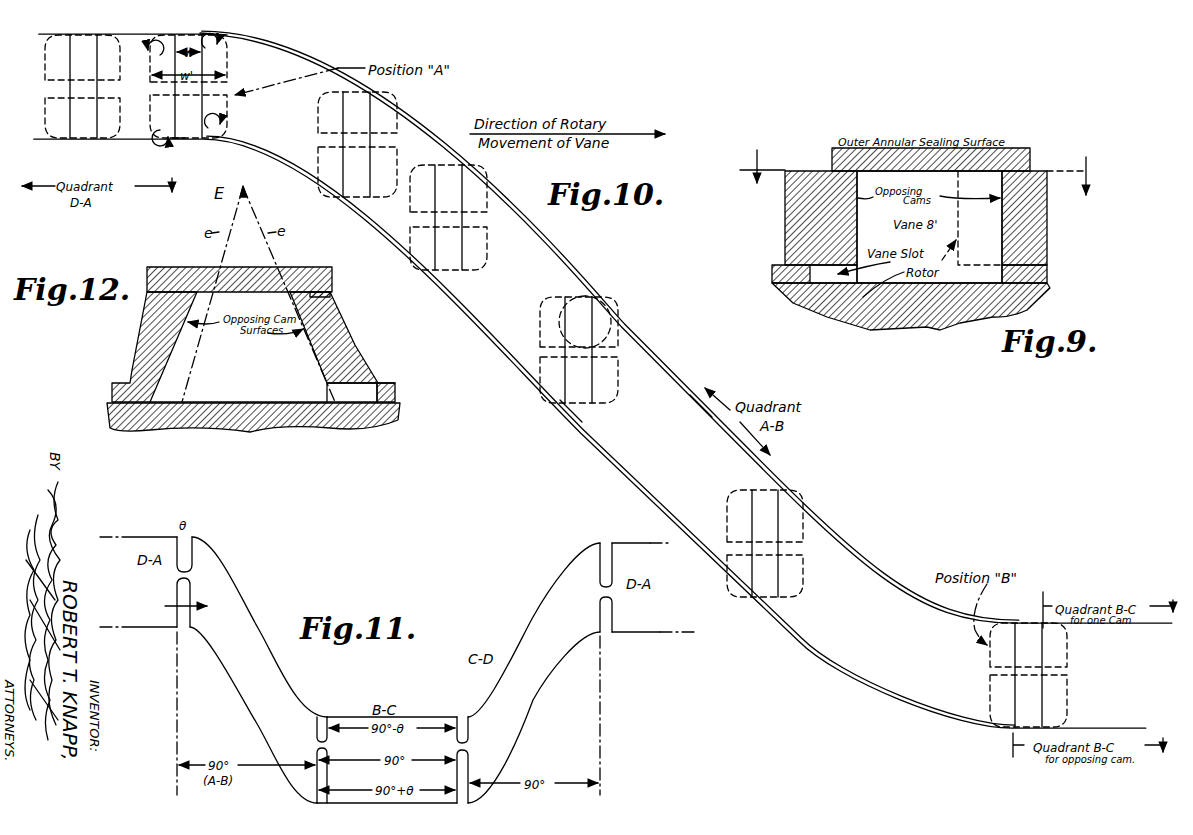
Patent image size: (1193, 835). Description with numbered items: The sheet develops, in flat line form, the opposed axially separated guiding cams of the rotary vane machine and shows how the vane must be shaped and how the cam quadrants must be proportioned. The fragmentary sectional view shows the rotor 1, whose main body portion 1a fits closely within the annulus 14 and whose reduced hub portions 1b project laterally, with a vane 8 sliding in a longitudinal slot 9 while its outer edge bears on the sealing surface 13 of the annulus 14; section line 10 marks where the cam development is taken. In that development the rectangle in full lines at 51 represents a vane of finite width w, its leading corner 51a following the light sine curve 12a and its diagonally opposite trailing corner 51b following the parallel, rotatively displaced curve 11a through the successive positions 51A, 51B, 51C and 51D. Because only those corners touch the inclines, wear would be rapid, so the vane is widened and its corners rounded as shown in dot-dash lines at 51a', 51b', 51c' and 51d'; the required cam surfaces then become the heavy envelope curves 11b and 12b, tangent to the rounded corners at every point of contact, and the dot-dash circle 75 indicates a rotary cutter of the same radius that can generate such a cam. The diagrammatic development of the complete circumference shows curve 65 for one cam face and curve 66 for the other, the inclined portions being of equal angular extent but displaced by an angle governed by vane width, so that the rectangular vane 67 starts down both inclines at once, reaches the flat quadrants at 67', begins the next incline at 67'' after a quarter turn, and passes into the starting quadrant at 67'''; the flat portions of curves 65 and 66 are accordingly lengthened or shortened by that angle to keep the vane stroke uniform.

In FIG. 10, the vane 51 is at (193, 141).
In FIG. 10, the leading corner 51a is at (239, 32).
In FIG. 10, the rounded corner portion 51a' is at (242, 49).
In FIG. 10, the trailing corner 51b is at (164, 159).
In FIG. 10, the rounded corner portion 51b' is at (139, 144).
In FIG. 10, the rounded corner portion 51c' is at (144, 56).
In FIG. 10, the rounded corner portion 51d' is at (239, 129).
In FIG. 10, the vane position 51A is at (352, 200).
In FIG. 10, the vane position 51B is at (447, 272).
In FIG. 10, the vane position 51C is at (598, 296).
In FIG. 10, the vane position 51D is at (775, 490).
In FIG. 10, the sine curve 12a is at (697, 415).
In FIG. 10, the cam surface 12b is at (652, 338).
In FIG. 10, the sine curve 11a is at (592, 446).
In FIG. 10, the cam surface 11b is at (590, 444).
In FIG. 10, the rotary cutter 75 is at (607, 373).
In FIG. 9, the section line 10 is at (913, 172).
In FIG. 12, the annulus 14 is at (332, 273).
In FIG. 12, the sealing cam surface 13 is at (333, 295).
In FIG. 12, the main body portion 1a is at (197, 358).
In FIG. 12, the hub portion 1b is at (383, 383).
In FIG. 12, the vane 8 is at (238, 384).
In FIG. 12, the longitudinal slot 9 is at (361, 393).
In FIG. 12, the rotor 1 is at (350, 430).
In FIG. 11, the cam face development curve 66 is at (240, 592).
In FIG. 11, the cam face development curve 65 is at (230, 681).
In FIG. 11, the vane 67 is at (165, 582).
In FIG. 11, the vane position 67' is at (340, 760).
In FIG. 11, the vane position 67'' is at (441, 760).
In FIG. 11, the vane position 67''' is at (588, 587).